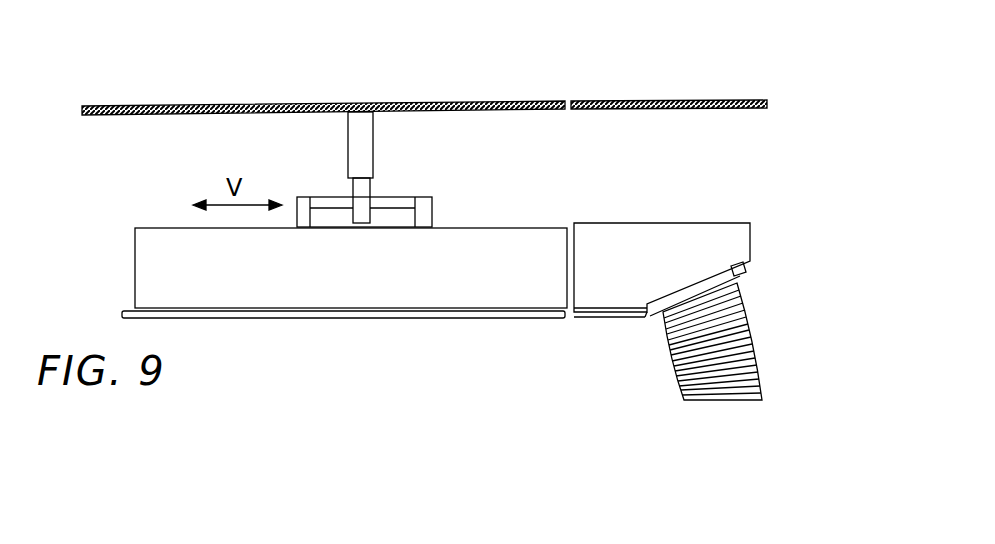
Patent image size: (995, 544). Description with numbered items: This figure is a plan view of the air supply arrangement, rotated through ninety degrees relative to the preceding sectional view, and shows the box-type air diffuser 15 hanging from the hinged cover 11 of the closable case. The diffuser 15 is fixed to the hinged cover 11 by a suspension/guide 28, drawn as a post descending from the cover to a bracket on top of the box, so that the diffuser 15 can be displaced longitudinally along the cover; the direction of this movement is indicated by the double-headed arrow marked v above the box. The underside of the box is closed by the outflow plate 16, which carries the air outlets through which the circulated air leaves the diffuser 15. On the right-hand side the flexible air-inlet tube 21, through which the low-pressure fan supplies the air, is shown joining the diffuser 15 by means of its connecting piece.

The hinged cover 11 is at (123, 115).
The box-type air diffuser 15 is at (481, 265).
The outflow plate 16 is at (477, 319).
The flexible air-inlet tube 21 is at (677, 343).
The suspension/guide 28 is at (422, 171).